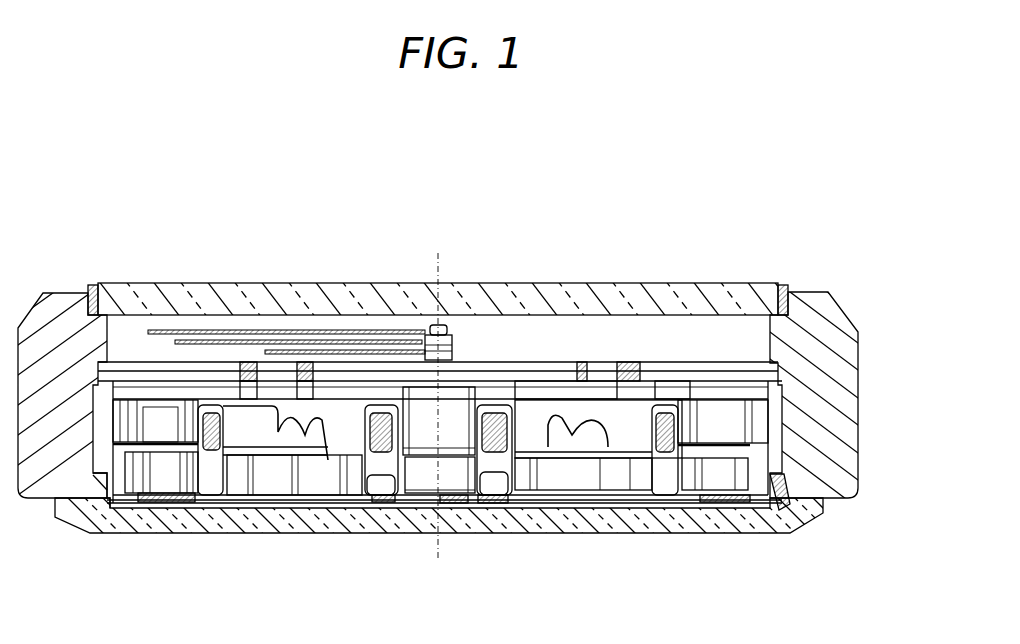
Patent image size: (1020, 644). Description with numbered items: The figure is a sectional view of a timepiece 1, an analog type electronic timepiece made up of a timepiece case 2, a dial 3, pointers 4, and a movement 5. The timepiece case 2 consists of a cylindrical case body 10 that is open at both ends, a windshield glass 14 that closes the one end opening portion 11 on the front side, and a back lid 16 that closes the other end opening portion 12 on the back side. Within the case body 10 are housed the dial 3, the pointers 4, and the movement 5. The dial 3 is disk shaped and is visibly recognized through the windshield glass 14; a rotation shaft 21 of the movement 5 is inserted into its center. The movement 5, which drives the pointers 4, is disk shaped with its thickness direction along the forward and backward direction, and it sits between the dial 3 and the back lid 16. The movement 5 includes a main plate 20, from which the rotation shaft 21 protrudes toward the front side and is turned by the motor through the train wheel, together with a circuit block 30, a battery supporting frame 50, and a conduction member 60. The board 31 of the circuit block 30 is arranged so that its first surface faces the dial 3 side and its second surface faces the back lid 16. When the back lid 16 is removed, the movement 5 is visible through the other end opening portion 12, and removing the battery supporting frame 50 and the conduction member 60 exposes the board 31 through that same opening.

The timepiece 1 is at (472, 376).
The timepiece case 2 is at (472, 409).
The dial 3 is at (651, 366).
The pointers 4 is at (312, 352).
The movement 5 is at (133, 512).
The case body 10 is at (852, 360).
The one end opening portion 11 is at (769, 286).
The other end opening portion 12 is at (778, 517).
The windshield glass 14 is at (329, 283).
The back lid 16 is at (239, 520).
The main plate 20 is at (422, 408).
The rotation shaft 21 is at (458, 342).
The circuit block 30 is at (413, 500).
The board 31 is at (297, 503).
The battery supporting frame 50 is at (452, 472).
The conduction member 60 is at (571, 510).